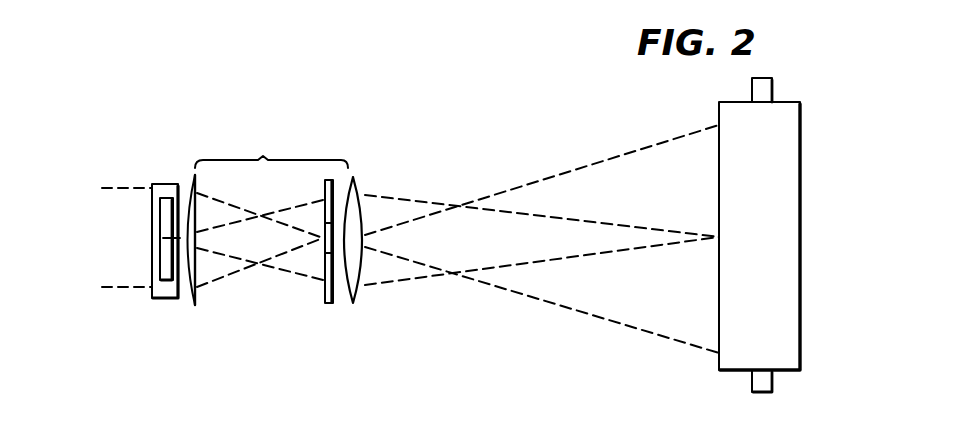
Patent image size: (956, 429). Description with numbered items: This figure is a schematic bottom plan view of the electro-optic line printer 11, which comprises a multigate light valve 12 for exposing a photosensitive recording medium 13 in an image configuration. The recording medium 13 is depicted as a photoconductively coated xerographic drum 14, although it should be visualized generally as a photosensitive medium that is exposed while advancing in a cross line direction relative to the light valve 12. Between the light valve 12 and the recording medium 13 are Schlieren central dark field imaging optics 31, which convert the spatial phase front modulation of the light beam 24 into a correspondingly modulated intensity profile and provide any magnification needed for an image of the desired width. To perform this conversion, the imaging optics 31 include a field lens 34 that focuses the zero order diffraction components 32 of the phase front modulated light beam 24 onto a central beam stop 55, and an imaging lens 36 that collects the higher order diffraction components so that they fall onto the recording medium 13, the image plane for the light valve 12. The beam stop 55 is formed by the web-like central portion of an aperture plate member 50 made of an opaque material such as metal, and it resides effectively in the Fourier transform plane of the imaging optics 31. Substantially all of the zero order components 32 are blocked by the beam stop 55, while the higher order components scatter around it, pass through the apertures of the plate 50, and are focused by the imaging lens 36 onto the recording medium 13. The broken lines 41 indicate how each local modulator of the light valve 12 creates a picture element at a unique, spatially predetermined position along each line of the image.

The electro-optic line printer 11 is at (466, 188).
The multigate light valve 12 is at (171, 167).
The photosensitive recording medium 13 is at (727, 113).
The photoconductively coated xerographic drum 14 is at (738, 333).
The light beam 24 is at (129, 263).
The Schlieren central dark field imaging optics 31 is at (271, 150).
The zero order diffraction components 32 is at (265, 258).
The field lens 34 is at (195, 305).
The imaging lens 36 is at (358, 290).
The broken lines 41 is at (490, 270).
The aperture plate member 50 is at (323, 303).
The central beam stop 55 is at (319, 252).